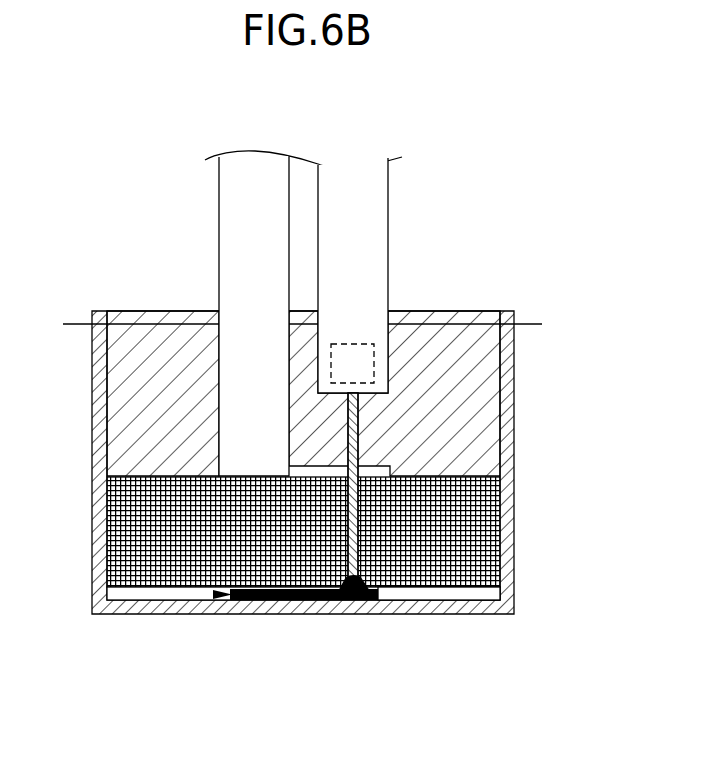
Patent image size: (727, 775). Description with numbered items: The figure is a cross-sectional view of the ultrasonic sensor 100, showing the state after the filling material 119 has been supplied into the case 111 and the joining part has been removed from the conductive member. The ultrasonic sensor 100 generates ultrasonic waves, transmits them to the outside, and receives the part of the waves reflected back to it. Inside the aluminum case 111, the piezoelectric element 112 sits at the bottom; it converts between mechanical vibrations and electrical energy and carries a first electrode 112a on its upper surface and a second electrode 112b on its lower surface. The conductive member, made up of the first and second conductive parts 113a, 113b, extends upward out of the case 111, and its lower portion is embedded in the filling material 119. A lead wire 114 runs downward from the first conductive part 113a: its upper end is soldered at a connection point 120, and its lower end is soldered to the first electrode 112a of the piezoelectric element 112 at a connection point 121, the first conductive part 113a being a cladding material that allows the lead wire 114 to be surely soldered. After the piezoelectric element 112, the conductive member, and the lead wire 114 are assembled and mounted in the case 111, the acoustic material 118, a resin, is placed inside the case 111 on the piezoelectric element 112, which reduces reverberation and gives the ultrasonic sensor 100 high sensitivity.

The ultrasonic sensor 100 is at (121, 129).
The case 111 is at (515, 311).
The piezoelectric element 112 is at (208, 614).
The first electrode 112a is at (376, 583).
The second electrode 112b is at (260, 614).
The first conductive part 113a is at (373, 236).
The second conductive part 113b is at (233, 237).
The lead wire 114 is at (359, 424).
The acoustic material 118 is at (465, 510).
The filling material 119 is at (458, 384).
The connection point 120 is at (360, 338).
The connection point 121 is at (365, 576).